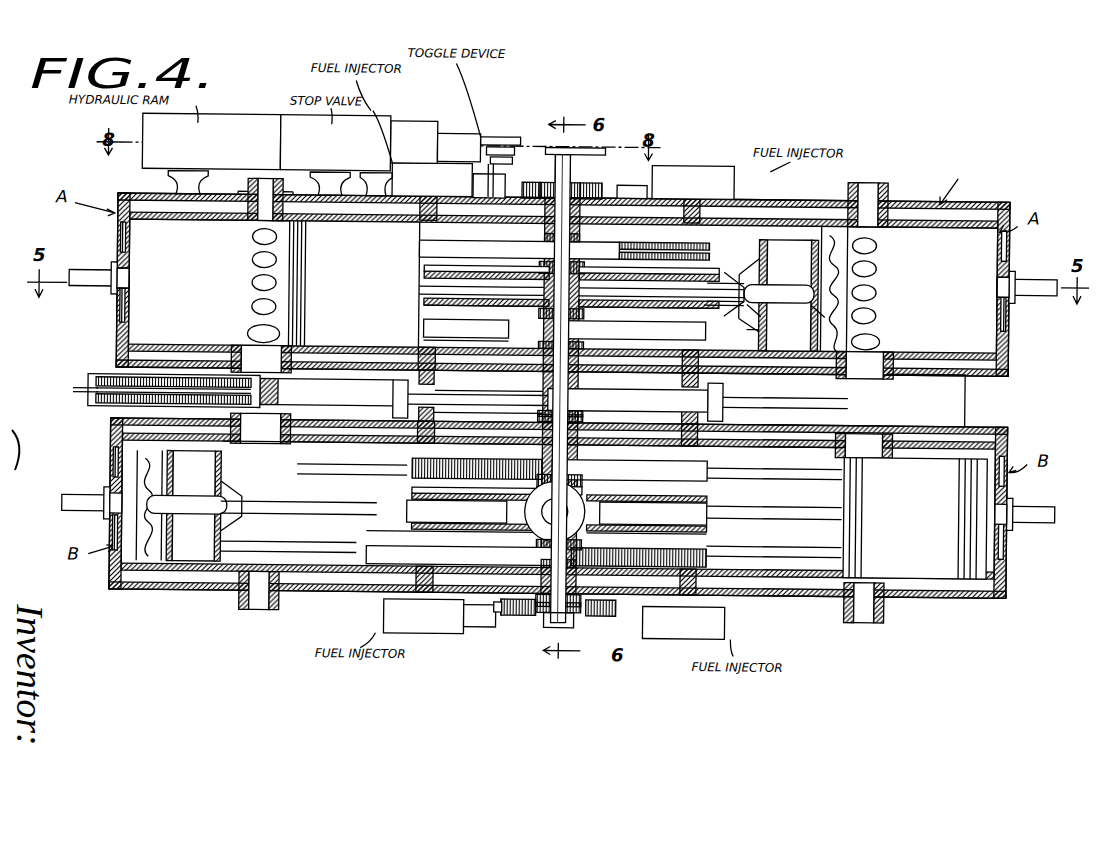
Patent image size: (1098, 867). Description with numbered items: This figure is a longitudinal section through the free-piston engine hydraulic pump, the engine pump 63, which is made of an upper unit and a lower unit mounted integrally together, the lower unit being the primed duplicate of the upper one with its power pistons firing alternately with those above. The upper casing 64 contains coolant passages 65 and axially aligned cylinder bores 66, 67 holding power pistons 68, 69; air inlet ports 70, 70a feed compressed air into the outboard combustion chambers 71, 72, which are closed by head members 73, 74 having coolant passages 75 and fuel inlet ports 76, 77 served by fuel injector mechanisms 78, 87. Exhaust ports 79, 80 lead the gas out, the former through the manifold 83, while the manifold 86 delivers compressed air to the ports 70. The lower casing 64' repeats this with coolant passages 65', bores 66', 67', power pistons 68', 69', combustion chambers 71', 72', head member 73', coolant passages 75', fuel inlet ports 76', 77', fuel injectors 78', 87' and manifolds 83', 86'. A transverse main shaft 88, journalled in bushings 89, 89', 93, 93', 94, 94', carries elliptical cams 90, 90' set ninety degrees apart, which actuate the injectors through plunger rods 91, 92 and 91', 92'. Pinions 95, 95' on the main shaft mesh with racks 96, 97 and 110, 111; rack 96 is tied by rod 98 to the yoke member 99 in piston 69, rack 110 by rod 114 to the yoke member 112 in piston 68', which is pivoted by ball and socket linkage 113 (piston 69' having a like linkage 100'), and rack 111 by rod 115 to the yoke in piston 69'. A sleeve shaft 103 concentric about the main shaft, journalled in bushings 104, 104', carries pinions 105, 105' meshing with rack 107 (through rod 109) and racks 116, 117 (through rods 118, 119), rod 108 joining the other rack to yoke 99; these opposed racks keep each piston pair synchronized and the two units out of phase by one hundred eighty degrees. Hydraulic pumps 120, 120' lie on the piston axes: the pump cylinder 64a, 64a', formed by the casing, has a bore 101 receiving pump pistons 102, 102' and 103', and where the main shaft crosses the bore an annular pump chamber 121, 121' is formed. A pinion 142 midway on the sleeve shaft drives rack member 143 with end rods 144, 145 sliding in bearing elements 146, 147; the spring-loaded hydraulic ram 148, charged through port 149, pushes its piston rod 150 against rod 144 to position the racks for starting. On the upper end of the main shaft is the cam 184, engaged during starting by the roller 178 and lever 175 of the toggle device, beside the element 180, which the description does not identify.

The engine pump 63 is at (560, 372).
The casing 64 is at (546, 271).
The casing 64' is at (557, 523).
The pump cylinder 64a is at (562, 266).
The pump cylinder 64a' is at (477, 486).
The coolant passages 65 is at (562, 308).
The coolant passages 65' is at (558, 500).
The cylinder bore 66 is at (209, 233).
The cylinder bore 66' is at (533, 470).
The cylinder bore 67 is at (923, 245).
The cylinder bore 67' is at (774, 487).
The power piston 68 is at (353, 284).
The power piston 68' is at (189, 506).
The power piston 69 is at (778, 296).
The power piston 69' is at (915, 518).
The air inlet ports 70 is at (252, 281).
The air inlet ports 70a is at (877, 307).
The combustion chamber 71 is at (111, 282).
The combustion chamber 71' is at (124, 529).
The combustion chamber 72 is at (1006, 327).
The combustion chamber 72' is at (977, 547).
The head member 73 is at (100, 231).
The head member 73' is at (93, 454).
The head member 74 is at (1008, 307).
The coolant passages 75 is at (561, 283).
The coolant passages 75' is at (560, 490).
The fuel inlet port 76 is at (99, 285).
The fuel inlet port 76' is at (91, 512).
The fuel inlet port 77 is at (1028, 282).
The fuel inlet port 77' is at (1031, 502).
The fuel injector mechanism 78 is at (432, 180).
The fuel injector mechanism 78' is at (439, 616).
The exhaust port 79 is at (250, 328).
The exhaust ports 80 is at (880, 333).
The manifold 83 is at (562, 362).
The manifold 83' is at (863, 446).
The manifold 86 is at (257, 184).
The manifold 86' is at (571, 412).
The fuel injector mechanism 87 is at (693, 183).
The fuel injector mechanism 87' is at (683, 623).
The main shaft 88 is at (580, 233).
The bushing 89 is at (555, 147).
The bushing 89' is at (545, 638).
The cam 90 is at (598, 182).
The cam 90' is at (517, 625).
The plunger rod 91 is at (523, 183).
The plunger rod 91' is at (476, 633).
The plunger rod 92 is at (632, 178).
The plunger rod 92' is at (607, 633).
The bushing 93 is at (577, 265).
The bushing 93' is at (576, 472).
The bushing 94 is at (578, 310).
The bushing 94' is at (571, 540).
The pinion 95 is at (542, 235).
The pinion 95' is at (539, 554).
The rack member 96 is at (519, 248).
The rack member 97 is at (678, 244).
The rod 98 is at (737, 287).
The yoke member 99 is at (772, 268).
The ball and socket linkage 100' is at (786, 307).
The pump bore 101 is at (723, 279).
The hydraulic pump piston 102 is at (724, 312).
The hydraulic pump piston 102' is at (646, 543).
The sleeve shaft 103 is at (571, 348).
The hydraulic pump piston 103' is at (453, 541).
The bushing 104 is at (583, 345).
The bushing 104' is at (584, 416).
The pinion 105 is at (484, 328).
The pinion 105' is at (548, 487).
The rack member 107 is at (631, 331).
The rod 108 is at (762, 326).
The rod 109 is at (435, 337).
The rack member 110 is at (466, 552).
The rack member 111 is at (656, 556).
The yoke member 112 is at (240, 482).
The ball and socket linkage 113 is at (220, 490).
The rod 114 is at (350, 545).
The rod 115 is at (792, 548).
The rack member 116 is at (398, 463).
The rack member 117 is at (632, 470).
The rod 118 is at (350, 468).
The rod 119 is at (800, 510).
The hydraulic pump 120 is at (649, 267).
The hydraulic pump 120' is at (654, 491).
The pump chamber 121 is at (581, 290).
The pump chamber 121' is at (537, 512).
The pinion 142 is at (545, 389).
The rack member 143 is at (655, 405).
The end rod 144 is at (488, 417).
The end rod 145 is at (780, 397).
The bearing element 146 is at (385, 396).
The bearing element 147 is at (732, 399).
The hydraulic ram 148 is at (80, 394).
The port 149 is at (82, 395).
The piston rod 150 is at (282, 387).
The lever 175 is at (505, 133).
The roller 178 is at (488, 150).
The stop valve housing 180 is at (450, 140).
The cam 184 is at (600, 145).